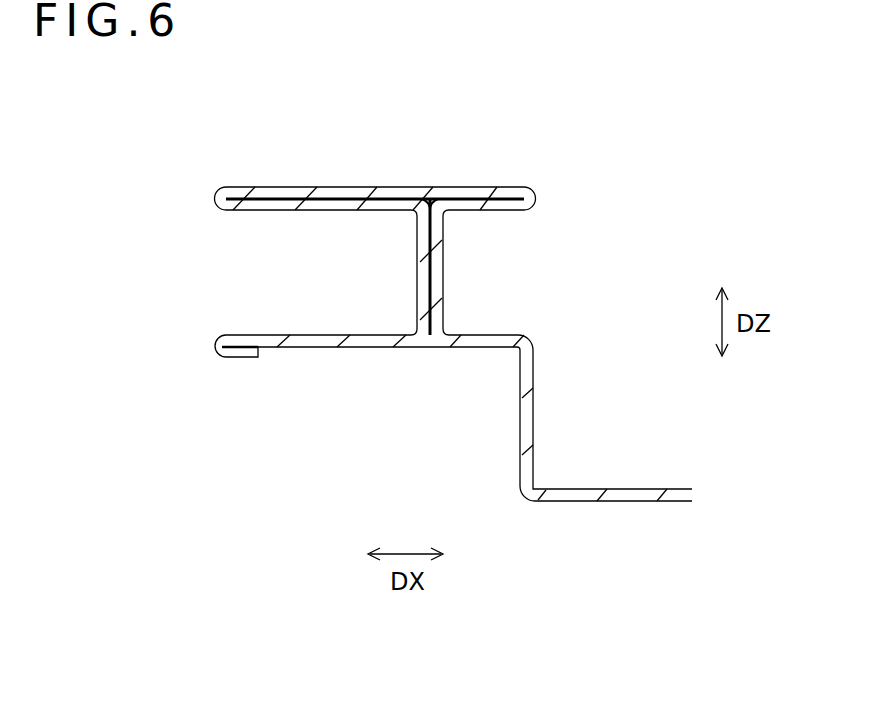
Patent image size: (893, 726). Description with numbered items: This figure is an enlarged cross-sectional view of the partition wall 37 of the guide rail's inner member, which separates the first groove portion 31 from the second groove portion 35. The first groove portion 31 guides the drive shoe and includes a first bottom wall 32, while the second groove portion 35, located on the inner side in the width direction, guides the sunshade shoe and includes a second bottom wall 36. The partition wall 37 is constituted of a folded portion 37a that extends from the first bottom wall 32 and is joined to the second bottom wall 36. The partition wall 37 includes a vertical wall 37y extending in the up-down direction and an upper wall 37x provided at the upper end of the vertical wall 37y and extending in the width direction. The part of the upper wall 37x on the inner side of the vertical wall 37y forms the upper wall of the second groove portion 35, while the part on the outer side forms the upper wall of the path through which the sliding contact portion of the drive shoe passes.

The first groove portion 31 is at (574, 236).
The first bottom wall 32 is at (620, 502).
The second groove portion 35 is at (214, 292).
The second bottom wall 36 is at (306, 348).
The partition wall 37 is at (464, 187).
The upper wall 37x is at (356, 187).
The vertical wall 37y is at (443, 265).
The folded portion 37a is at (532, 187).